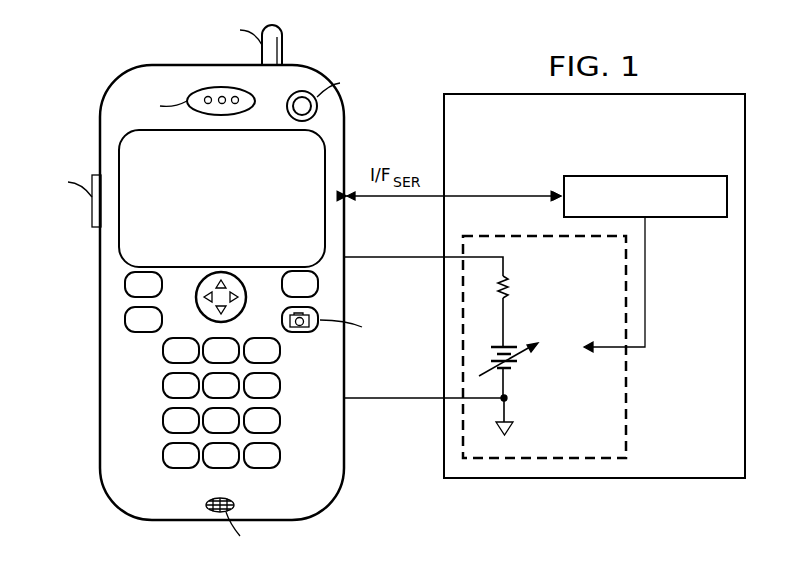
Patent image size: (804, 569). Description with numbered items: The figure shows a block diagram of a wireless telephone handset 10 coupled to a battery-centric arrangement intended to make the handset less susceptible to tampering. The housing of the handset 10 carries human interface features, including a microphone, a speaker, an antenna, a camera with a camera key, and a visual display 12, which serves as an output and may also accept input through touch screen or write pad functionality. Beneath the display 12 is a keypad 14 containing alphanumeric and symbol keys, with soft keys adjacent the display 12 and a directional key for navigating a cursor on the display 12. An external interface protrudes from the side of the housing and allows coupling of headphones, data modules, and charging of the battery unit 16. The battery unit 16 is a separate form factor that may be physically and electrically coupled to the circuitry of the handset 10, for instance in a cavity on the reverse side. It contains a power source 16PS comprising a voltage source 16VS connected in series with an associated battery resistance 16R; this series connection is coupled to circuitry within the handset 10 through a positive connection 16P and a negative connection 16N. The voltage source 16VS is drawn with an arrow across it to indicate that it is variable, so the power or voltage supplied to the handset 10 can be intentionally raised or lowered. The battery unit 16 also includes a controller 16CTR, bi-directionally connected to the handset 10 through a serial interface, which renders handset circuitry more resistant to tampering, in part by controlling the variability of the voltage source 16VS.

The wireless telephone handset 10 is at (98, 69).
The visual display 12 is at (239, 203).
The keypad 14 is at (85, 263).
The battery unit 16 is at (608, 160).
The positive connection 16P is at (392, 257).
The negative connection 16N is at (393, 399).
The battery resistance 16R is at (525, 288).
The voltage source 16VS is at (525, 348).
The controller 16CTR is at (685, 218).
The power source 16PS is at (626, 408).